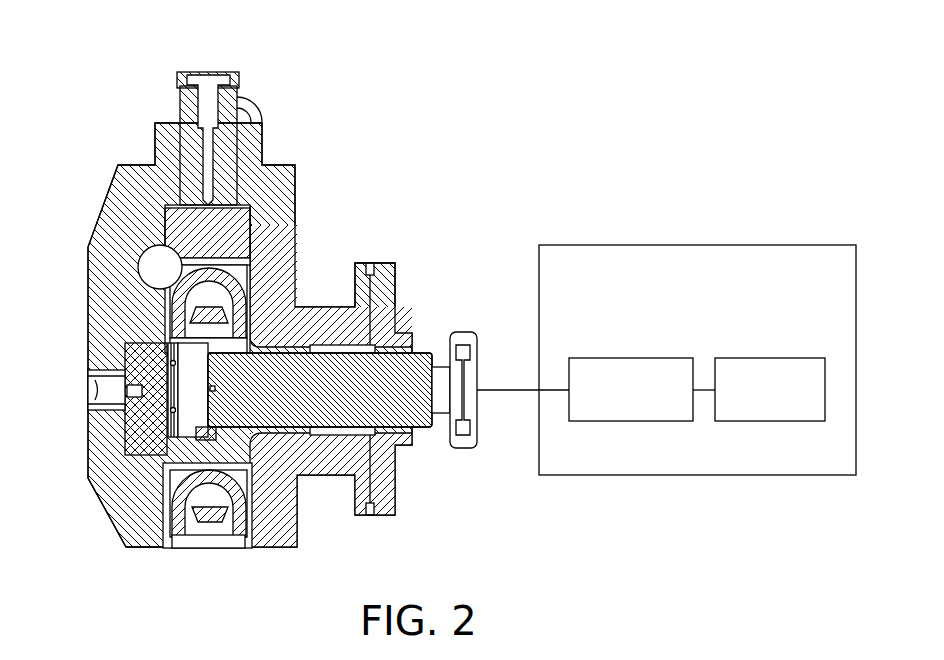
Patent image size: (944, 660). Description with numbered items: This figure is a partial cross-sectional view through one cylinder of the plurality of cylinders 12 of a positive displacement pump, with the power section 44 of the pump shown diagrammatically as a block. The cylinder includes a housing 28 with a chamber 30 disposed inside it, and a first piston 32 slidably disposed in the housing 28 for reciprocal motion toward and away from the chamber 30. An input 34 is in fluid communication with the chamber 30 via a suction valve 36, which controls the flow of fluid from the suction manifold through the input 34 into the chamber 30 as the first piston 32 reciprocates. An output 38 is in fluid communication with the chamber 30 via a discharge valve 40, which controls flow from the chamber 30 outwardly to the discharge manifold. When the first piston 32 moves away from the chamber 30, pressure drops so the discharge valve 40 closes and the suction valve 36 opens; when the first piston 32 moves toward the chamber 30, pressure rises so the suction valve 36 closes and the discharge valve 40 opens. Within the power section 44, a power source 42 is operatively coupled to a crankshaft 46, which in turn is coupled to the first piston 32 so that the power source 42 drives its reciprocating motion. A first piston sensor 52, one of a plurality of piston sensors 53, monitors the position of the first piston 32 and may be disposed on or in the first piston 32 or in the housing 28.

The plurality of cylinders 12 is at (114, 245).
The housing 28 is at (277, 260).
The chamber 30 is at (190, 378).
The first piston 32 is at (343, 408).
The input 34 is at (190, 549).
The suction valve 36 is at (188, 482).
The output 38 is at (207, 72).
The discharge valve 40 is at (223, 262).
The power source 42 is at (773, 358).
The power section 44 is at (705, 244).
The crankshaft 46 is at (633, 358).
The first piston sensor 52 is at (212, 389).
The plurality of piston sensors 53 is at (96, 408).